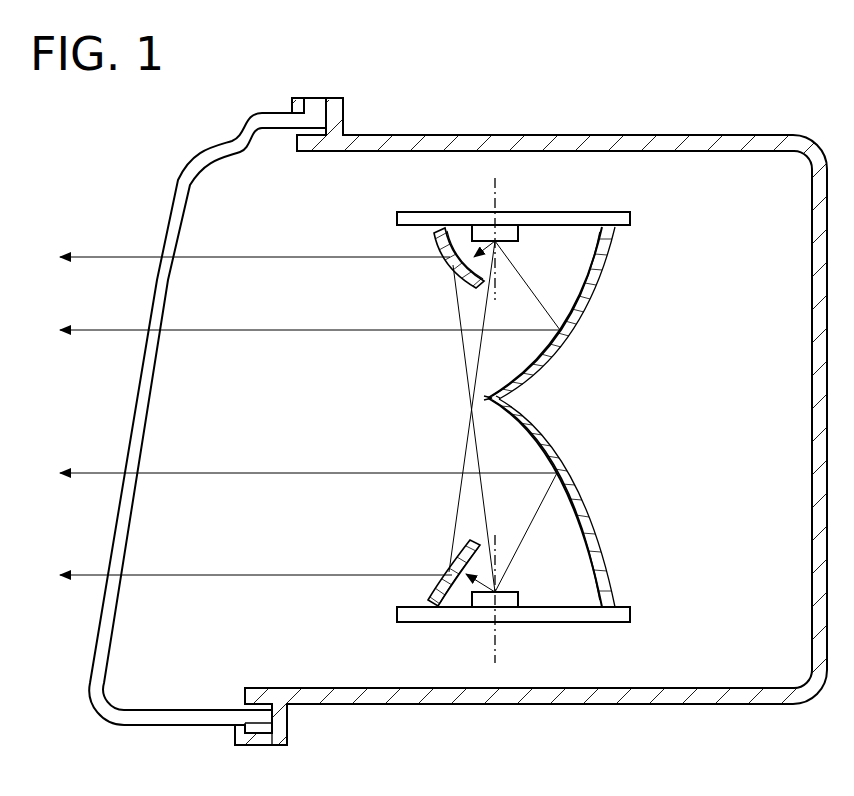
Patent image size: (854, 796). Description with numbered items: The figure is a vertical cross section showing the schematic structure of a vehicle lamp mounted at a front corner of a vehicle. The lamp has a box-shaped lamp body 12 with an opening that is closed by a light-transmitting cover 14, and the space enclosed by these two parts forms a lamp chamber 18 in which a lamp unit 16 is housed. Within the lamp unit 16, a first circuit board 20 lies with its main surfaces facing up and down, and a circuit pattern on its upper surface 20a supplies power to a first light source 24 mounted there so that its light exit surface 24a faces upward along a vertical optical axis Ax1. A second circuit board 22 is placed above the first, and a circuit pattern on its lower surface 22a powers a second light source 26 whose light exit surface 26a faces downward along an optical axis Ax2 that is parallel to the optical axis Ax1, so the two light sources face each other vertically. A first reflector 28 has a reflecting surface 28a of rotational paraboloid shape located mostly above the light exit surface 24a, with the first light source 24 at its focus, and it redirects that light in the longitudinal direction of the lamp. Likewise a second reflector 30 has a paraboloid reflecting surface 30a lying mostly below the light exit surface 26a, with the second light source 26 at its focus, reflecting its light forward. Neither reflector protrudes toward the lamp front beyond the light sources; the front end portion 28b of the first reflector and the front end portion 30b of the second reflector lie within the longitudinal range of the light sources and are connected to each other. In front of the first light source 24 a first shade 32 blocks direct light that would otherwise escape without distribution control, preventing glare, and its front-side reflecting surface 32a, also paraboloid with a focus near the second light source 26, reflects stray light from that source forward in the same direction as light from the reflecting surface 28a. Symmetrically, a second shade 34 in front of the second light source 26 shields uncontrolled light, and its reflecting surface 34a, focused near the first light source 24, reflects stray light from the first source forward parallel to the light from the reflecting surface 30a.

The lamp body 12 is at (685, 135).
The light-transmitting cover 14 is at (173, 184).
The lamp unit 16 is at (360, 610).
The lamp chamber 18 is at (285, 193).
The first circuit board 20 is at (600, 622).
The upper surface of the first circuit board 20a is at (538, 607).
The second circuit board 22 is at (590, 212).
The lower surface of the second circuit board 22a is at (545, 228).
The first light source 24 is at (520, 598).
The light exit surface of the first light source 24a is at (512, 585).
The second light source 26 is at (522, 237).
The light exit surface of the second light source 26a is at (512, 246).
The first reflector 28 is at (584, 480).
The reflecting surface of the first reflector 28a is at (528, 442).
The front end portion of the first reflector 28b is at (476, 395).
The second reflector 30 is at (584, 320).
The reflecting surface of the second reflector 30a is at (528, 362).
The front end portion of the second reflector 30b is at (498, 397).
The first shade 32 is at (446, 603).
The reflecting surface of the first shade 32a is at (434, 598).
The second shade 34 is at (450, 229).
The reflecting surface of the second shade 34a is at (443, 252).
The optical axis of the first light source Ax1 is at (493, 654).
The optical axis of the second light source Ax2 is at (493, 180).